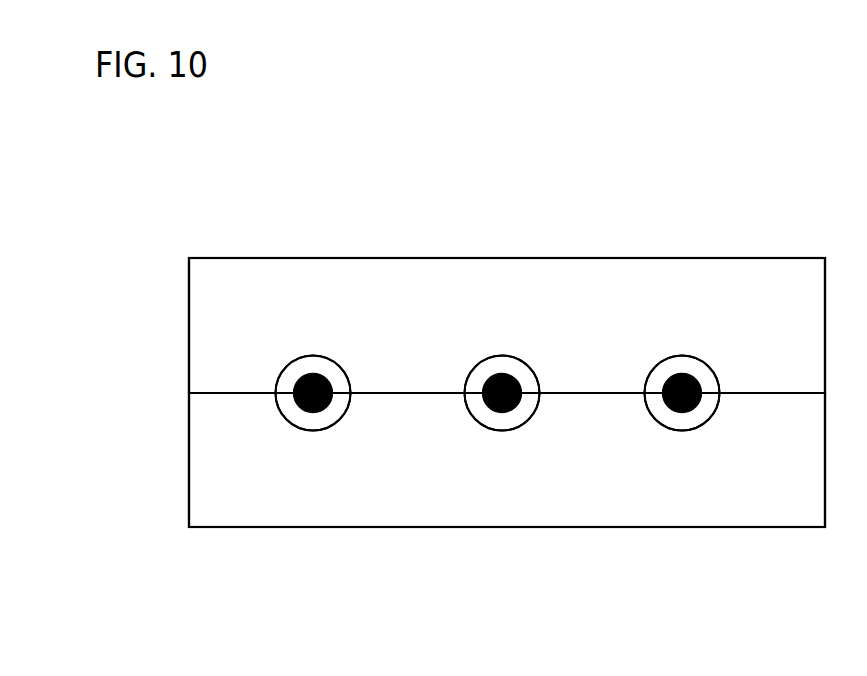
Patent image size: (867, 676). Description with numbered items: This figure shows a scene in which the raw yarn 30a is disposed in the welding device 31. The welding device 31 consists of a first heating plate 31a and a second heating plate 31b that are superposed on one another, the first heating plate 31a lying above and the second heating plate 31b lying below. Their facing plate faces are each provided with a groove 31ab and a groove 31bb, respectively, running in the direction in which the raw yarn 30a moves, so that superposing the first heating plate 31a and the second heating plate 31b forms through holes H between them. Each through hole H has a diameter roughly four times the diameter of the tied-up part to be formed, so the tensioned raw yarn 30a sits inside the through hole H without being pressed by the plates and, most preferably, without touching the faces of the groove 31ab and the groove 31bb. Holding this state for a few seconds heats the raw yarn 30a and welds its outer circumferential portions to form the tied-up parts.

The welding device 31 is at (183, 204).
The first heating plate 31a is at (446, 248).
The second heating plate 31b is at (452, 537).
The groove 31ab is at (313, 356).
The groove 31bb is at (313, 430).
The raw yarn 30a is at (304, 408).
The through hole H is at (328, 370).